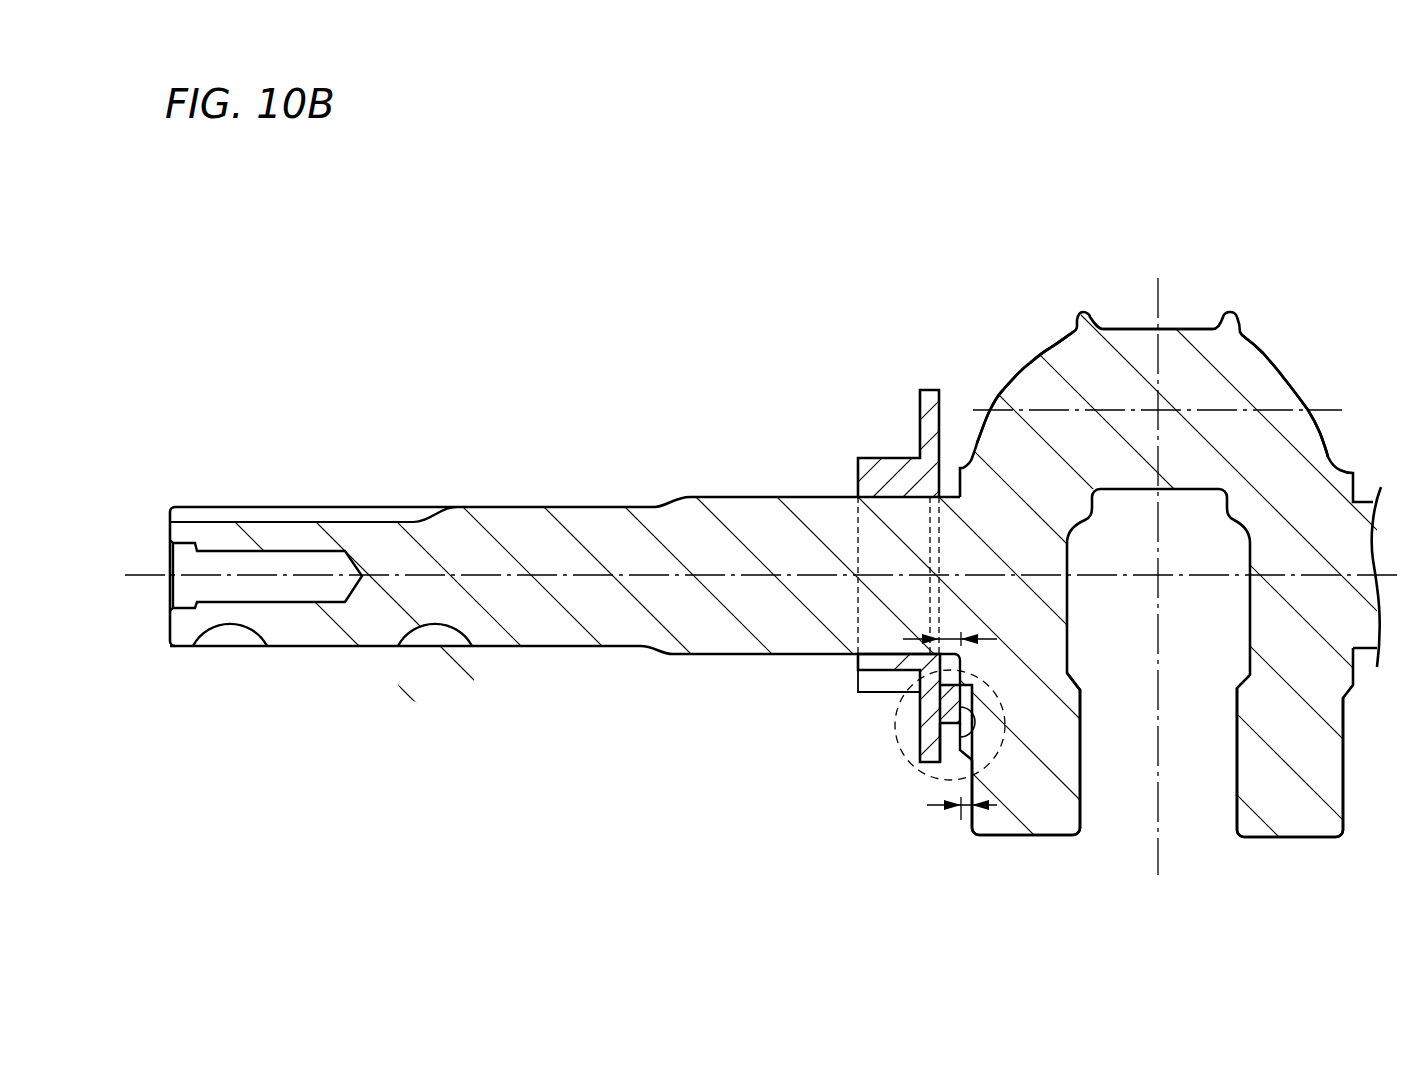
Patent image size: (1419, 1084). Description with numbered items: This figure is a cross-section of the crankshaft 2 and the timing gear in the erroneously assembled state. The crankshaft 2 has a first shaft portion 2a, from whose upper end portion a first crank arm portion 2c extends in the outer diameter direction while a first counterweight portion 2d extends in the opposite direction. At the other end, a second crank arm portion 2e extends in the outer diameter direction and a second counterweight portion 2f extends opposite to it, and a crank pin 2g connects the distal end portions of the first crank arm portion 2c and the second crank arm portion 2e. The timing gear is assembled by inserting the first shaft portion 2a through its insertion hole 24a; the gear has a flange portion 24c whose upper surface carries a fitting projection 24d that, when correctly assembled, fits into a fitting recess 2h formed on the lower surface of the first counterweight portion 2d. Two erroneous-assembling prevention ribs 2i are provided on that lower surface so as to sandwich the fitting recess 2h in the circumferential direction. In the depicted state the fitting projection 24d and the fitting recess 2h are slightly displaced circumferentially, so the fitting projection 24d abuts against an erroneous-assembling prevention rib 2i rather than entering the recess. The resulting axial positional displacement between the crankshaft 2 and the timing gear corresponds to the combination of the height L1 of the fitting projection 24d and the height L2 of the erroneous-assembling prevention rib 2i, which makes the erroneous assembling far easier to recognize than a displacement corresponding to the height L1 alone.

The crankshaft 2 is at (709, 542).
The first shaft portion 2a is at (592, 525).
The first crank arm portion 2c is at (1042, 355).
The first counterweight portion 2d is at (1063, 808).
The second crank arm portion 2e is at (1267, 353).
The second counterweight portion 2f is at (1300, 808).
The crank pin 2g is at (1135, 350).
The fitting recess 2h is at (967, 768).
The erroneous-assembling prevention rib 2i is at (960, 737).
The insertion hole 24a is at (898, 495).
The flange portion 24c is at (920, 722).
The fitting projection 24d is at (963, 752).
The height of the fitting projection L1 is at (968, 641).
The height of the erroneous-assembling prevention rib L2 is at (984, 808).